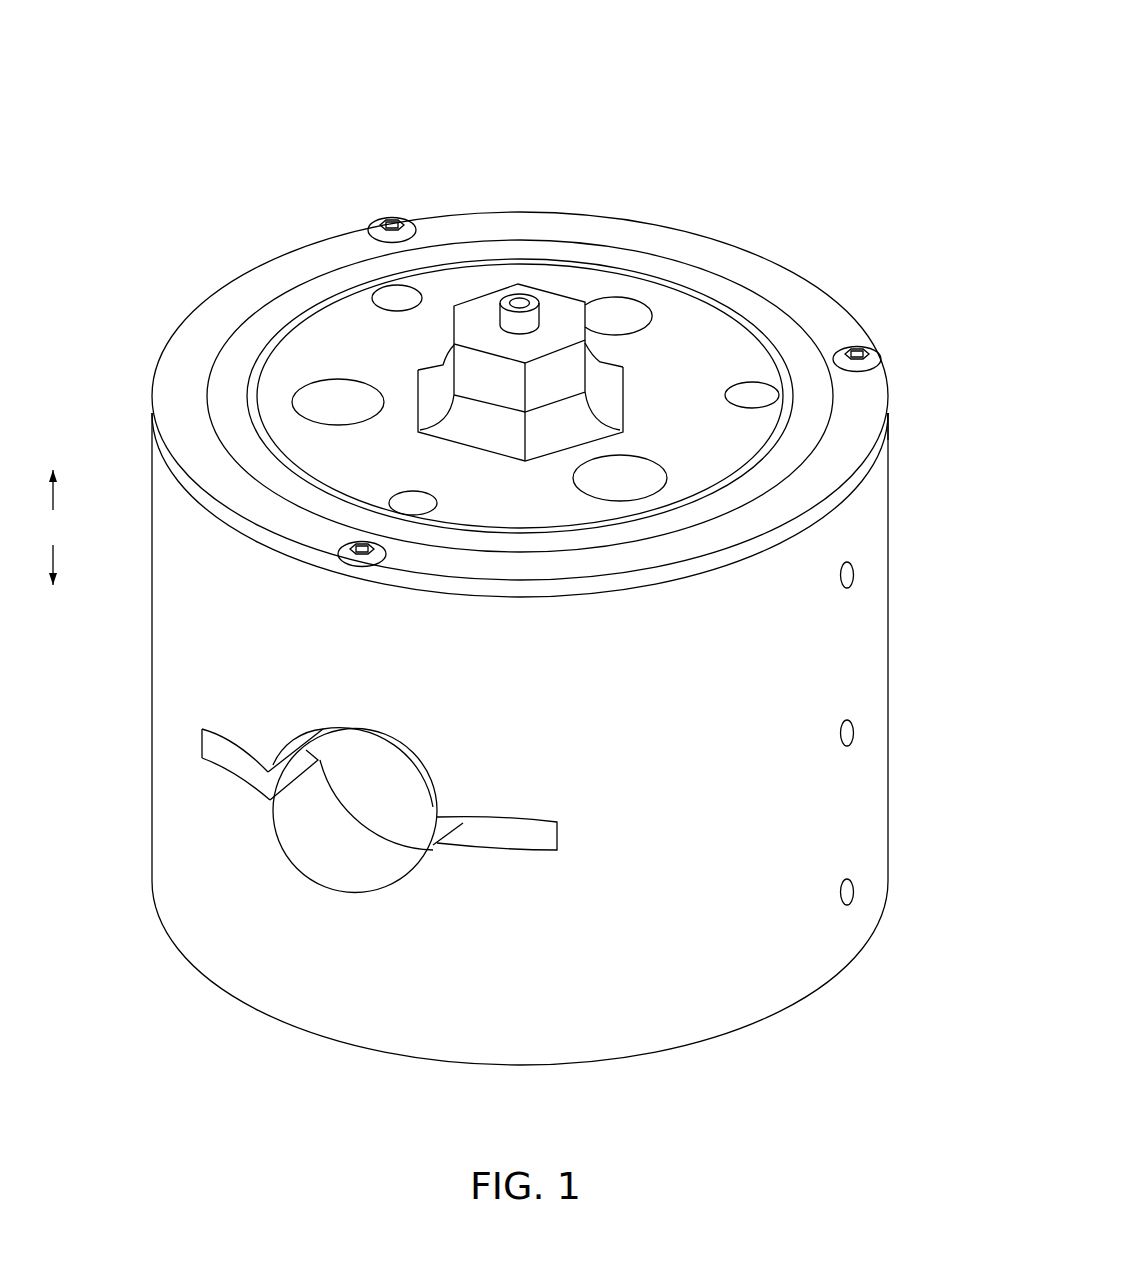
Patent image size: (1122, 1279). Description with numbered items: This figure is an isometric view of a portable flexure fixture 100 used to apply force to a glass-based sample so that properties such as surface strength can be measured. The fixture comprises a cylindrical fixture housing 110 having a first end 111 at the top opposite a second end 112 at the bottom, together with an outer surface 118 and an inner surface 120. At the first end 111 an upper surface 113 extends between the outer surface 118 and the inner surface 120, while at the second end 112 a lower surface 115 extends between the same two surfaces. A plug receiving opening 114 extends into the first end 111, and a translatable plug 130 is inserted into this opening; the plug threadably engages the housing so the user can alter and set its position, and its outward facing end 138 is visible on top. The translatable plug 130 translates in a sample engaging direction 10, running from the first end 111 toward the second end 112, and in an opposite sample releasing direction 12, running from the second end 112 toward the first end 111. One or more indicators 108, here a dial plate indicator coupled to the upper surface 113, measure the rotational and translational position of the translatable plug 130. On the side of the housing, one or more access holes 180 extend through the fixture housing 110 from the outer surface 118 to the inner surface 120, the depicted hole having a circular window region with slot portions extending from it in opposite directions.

The portable flexure fixture 100 is at (766, 114).
The first end 111 is at (794, 221).
The fixture housing 110 is at (838, 295).
The upper surface 113 is at (887, 427).
The sample releasing direction 12 is at (53, 500).
The sample engaging direction 10 is at (53, 547).
The outer surface 118 is at (152, 643).
The lower surface 115 is at (488, 1067).
The second end 112 is at (773, 1023).
The plug receiving opening 114 is at (497, 273).
The translatable plug 130 is at (571, 286).
The indicators 108 is at (258, 272).
The inner surface 120 is at (207, 390).
The outward facing end 138 is at (712, 364).
The access holes 180 is at (338, 855).